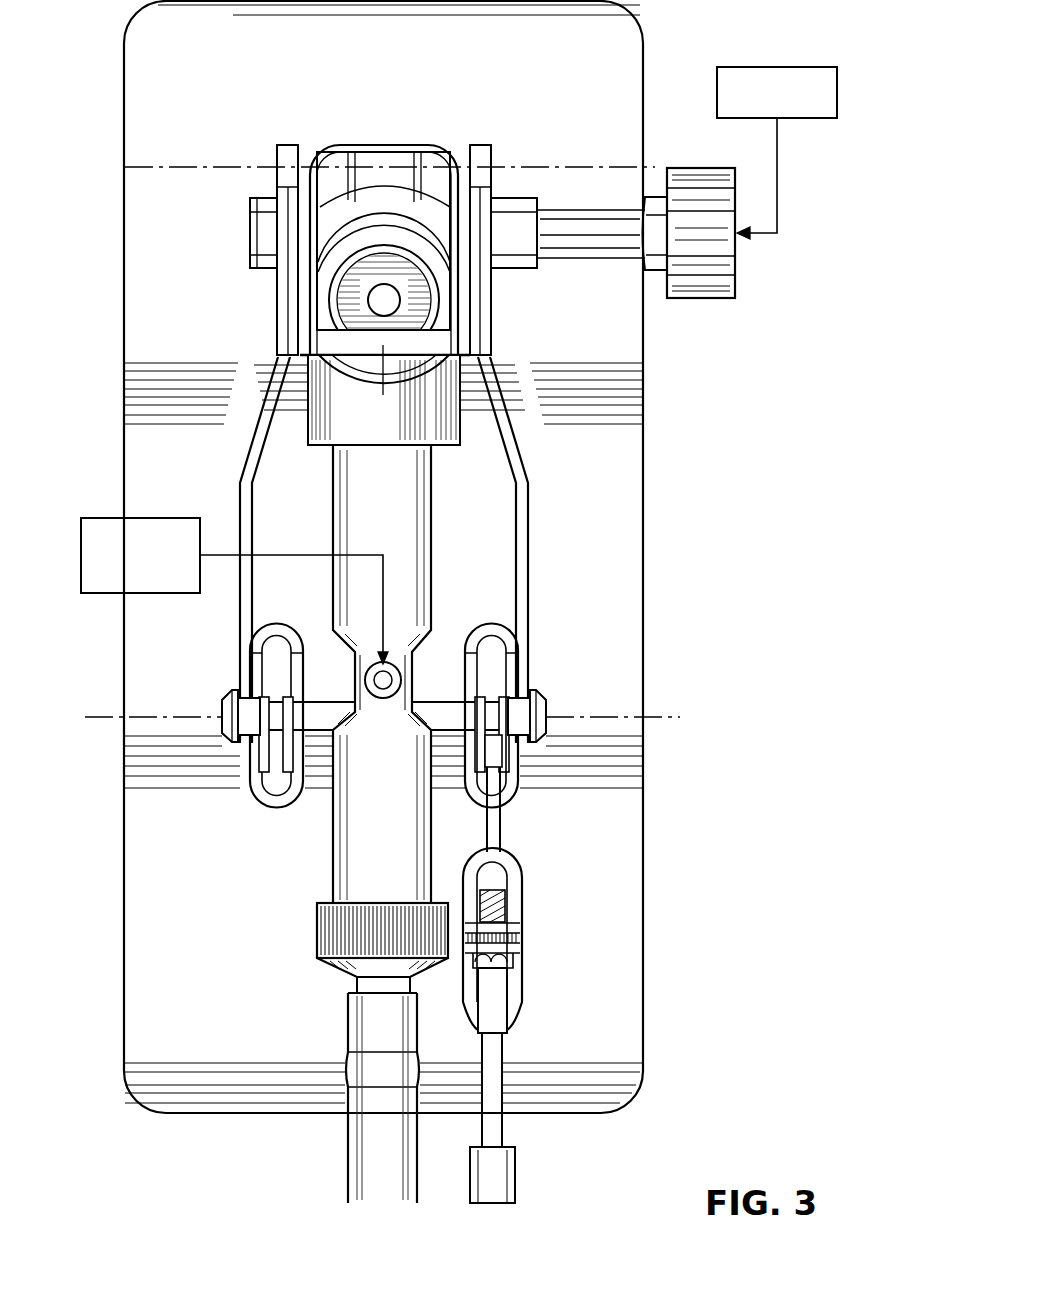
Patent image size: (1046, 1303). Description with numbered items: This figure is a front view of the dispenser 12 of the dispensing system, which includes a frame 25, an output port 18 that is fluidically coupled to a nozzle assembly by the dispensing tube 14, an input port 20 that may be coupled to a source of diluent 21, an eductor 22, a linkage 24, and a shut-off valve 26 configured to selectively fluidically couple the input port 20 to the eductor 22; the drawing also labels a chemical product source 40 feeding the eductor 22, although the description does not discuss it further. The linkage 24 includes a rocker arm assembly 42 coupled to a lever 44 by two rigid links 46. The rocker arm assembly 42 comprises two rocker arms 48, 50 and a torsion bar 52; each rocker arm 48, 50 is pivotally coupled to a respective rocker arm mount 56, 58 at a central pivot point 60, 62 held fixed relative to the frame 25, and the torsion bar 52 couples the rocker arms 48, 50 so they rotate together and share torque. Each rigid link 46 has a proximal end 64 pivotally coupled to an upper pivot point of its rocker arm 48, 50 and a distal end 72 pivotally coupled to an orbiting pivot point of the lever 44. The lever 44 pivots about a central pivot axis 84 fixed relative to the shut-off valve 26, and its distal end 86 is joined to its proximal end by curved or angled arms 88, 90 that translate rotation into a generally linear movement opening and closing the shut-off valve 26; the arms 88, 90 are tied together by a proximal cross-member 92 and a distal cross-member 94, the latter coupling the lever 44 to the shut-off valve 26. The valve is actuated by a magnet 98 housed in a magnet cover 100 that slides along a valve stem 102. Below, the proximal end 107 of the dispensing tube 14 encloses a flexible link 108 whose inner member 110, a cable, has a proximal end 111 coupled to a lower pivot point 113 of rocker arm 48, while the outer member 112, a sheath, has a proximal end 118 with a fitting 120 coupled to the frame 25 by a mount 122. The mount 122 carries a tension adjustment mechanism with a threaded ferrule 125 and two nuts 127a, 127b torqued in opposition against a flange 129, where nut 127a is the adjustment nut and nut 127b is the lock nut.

The dispenser 12 is at (122, 86).
The dispensing tube 14 is at (334, 1183).
The output port 18 is at (317, 934).
The input port 20 is at (735, 282).
The source of diluent 21 is at (820, 67).
The eductor 22 is at (424, 666).
The linkage 24 is at (542, 473).
The frame 25 is at (218, 68).
The shut-off valve 26 is at (360, 388).
The chemical product source 40 is at (100, 518).
The rocker arm assembly 42 is at (540, 682).
The lever 44 is at (402, 143).
The rigid links 46 is at (248, 462).
The rocker arm 48 is at (580, 802).
The rocker arm 50 is at (262, 757).
The torsion bar 52 is at (331, 700).
The rocker arm mount 56 is at (486, 623).
The rocker arm mount 58 is at (270, 623).
The central pivot point 60 is at (546, 716).
The central pivot point 62 is at (224, 717).
The proximal end 64 is at (240, 746).
The distal end 72 is at (287, 144).
The central pivot axis 84 is at (166, 166).
The distal end 86 is at (298, 370).
The arm 88 is at (470, 327).
The arm 90 is at (300, 323).
The proximal cross-member 92 is at (402, 178).
The distal cross-member 94 is at (384, 383).
The magnet 98 is at (434, 318).
The magnet cover 100 is at (403, 368).
The valve stem 102 is at (365, 284).
The proximal end 107 is at (348, 1013).
The flexible link 108 is at (504, 1092).
The inner member 110 is at (500, 832).
The proximal end 111 is at (482, 783).
The outer member 112 is at (497, 1131).
The lower pivot point 113 is at (490, 752).
The proximal end 118 is at (503, 1050).
The fitting 120 is at (497, 1020).
The mount 122 is at (512, 868).
The threaded ferrule 125 is at (508, 905).
The adjustment nut 127a is at (520, 936).
The lock nut 127b is at (515, 963).
The flange 129 is at (520, 947).